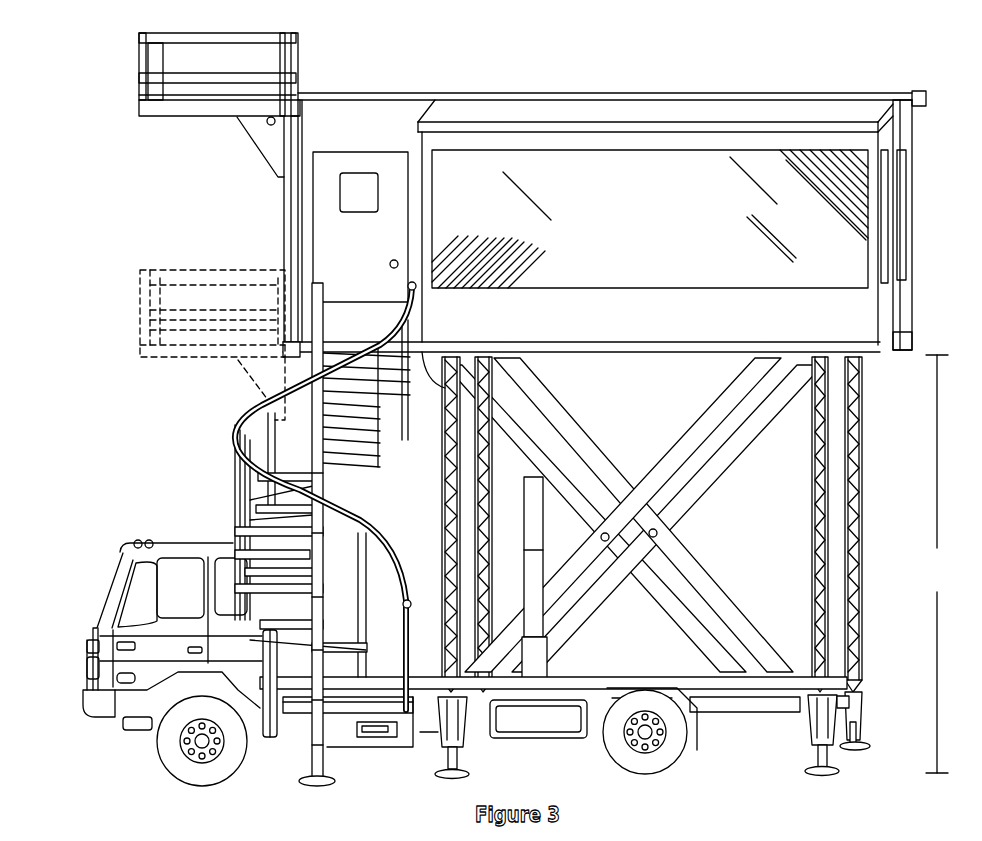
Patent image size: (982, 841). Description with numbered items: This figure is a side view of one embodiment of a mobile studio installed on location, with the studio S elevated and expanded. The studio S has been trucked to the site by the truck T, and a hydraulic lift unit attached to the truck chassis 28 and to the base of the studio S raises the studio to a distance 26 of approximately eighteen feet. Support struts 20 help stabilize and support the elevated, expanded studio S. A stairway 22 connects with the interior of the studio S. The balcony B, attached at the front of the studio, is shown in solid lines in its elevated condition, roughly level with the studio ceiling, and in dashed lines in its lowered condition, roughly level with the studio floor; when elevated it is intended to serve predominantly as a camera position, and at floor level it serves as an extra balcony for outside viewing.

The balcony B is at (131, 60).
The studio S is at (927, 206).
The truck T is at (80, 673).
The support struts 20 is at (870, 428).
The stairway 22 is at (378, 524).
The distance 26 is at (936, 564).
The truck chassis 28 is at (720, 729).